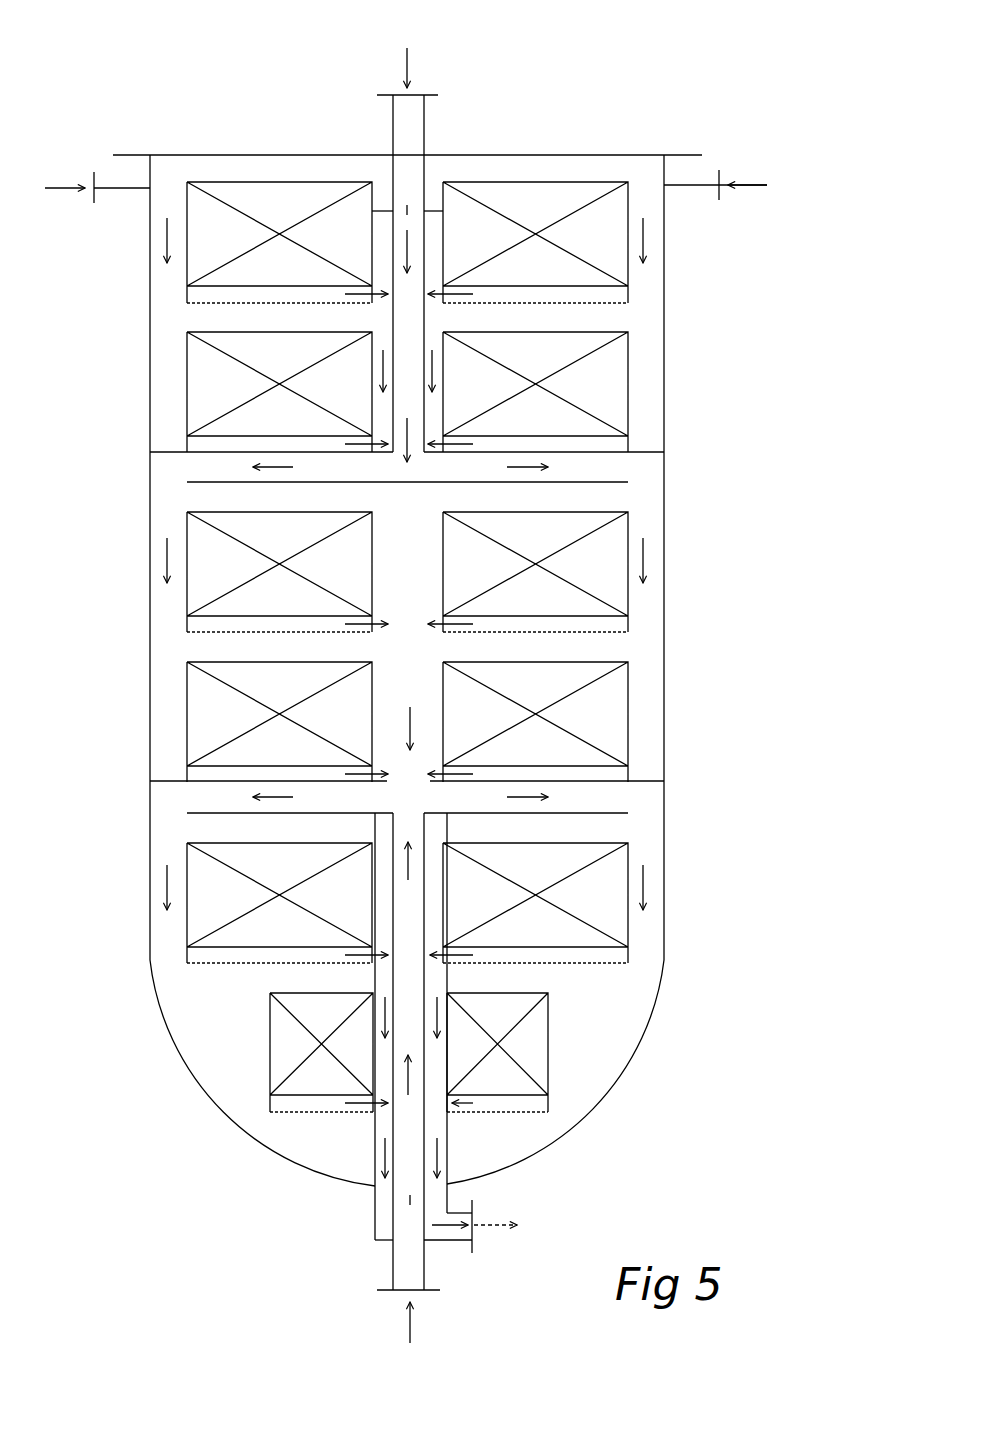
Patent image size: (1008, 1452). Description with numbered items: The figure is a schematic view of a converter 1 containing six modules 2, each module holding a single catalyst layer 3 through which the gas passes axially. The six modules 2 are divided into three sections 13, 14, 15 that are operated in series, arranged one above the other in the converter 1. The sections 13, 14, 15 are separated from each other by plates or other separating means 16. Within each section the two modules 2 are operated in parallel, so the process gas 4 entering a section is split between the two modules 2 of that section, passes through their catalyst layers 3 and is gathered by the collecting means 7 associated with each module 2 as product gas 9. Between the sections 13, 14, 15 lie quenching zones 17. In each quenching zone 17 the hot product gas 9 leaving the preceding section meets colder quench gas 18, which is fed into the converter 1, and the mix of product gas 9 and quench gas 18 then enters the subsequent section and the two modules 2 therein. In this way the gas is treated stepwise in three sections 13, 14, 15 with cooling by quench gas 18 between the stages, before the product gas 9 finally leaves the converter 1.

The converter 1 is at (664, 355).
The module 2 is at (630, 710).
The catalyst layer 3 is at (597, 912).
The process gas 4 is at (757, 192).
The collecting means 7 is at (600, 953).
The product gas 9 is at (418, 657).
The first section 13 is at (152, 363).
The second section 14 is at (160, 642).
The third section 15 is at (183, 1008).
The separating means 16 is at (647, 445).
The quenching zone 17 is at (487, 465).
The quench gas 18 is at (410, 66).